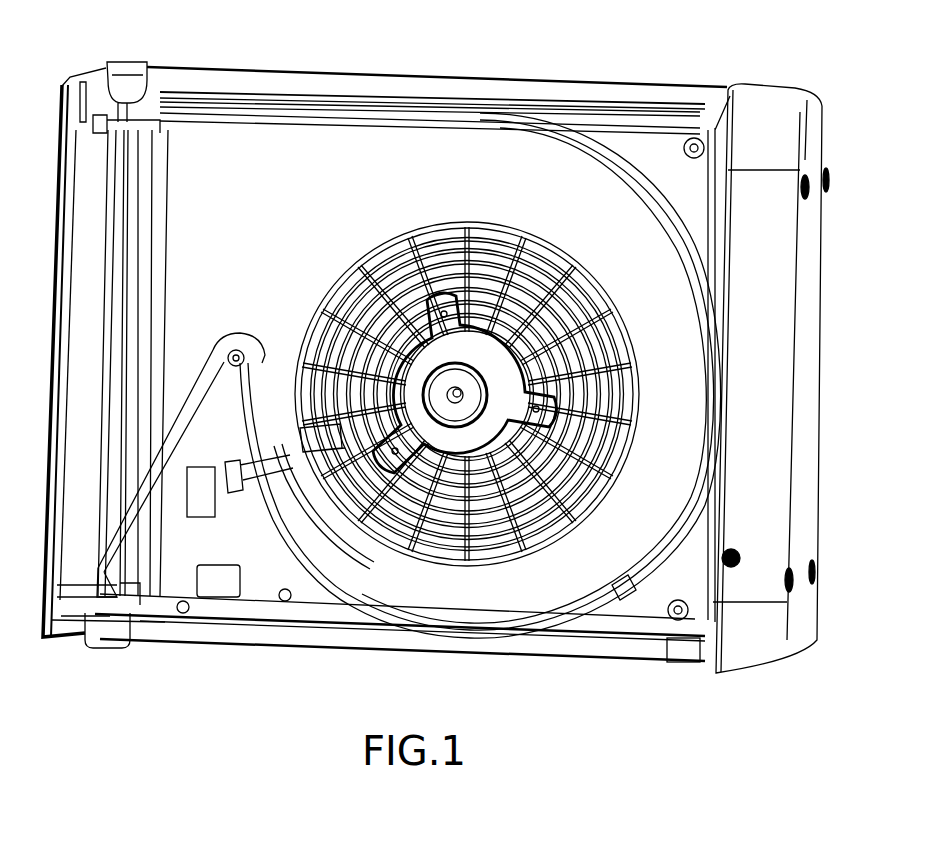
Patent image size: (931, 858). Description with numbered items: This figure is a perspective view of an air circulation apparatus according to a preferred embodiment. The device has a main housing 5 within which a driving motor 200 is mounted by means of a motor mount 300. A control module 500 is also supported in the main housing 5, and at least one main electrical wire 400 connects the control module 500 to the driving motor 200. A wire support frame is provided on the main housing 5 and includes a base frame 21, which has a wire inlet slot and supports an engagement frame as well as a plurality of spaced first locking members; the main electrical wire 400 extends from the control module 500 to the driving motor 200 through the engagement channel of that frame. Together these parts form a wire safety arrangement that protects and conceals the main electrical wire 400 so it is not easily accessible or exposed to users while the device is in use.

The base frame 21 is at (337, 158).
The main housing 5 is at (762, 115).
The driving motor 200 is at (472, 338).
The motor mount 300 is at (434, 432).
The main electrical wire 400 is at (310, 515).
The control module 500 is at (197, 510).